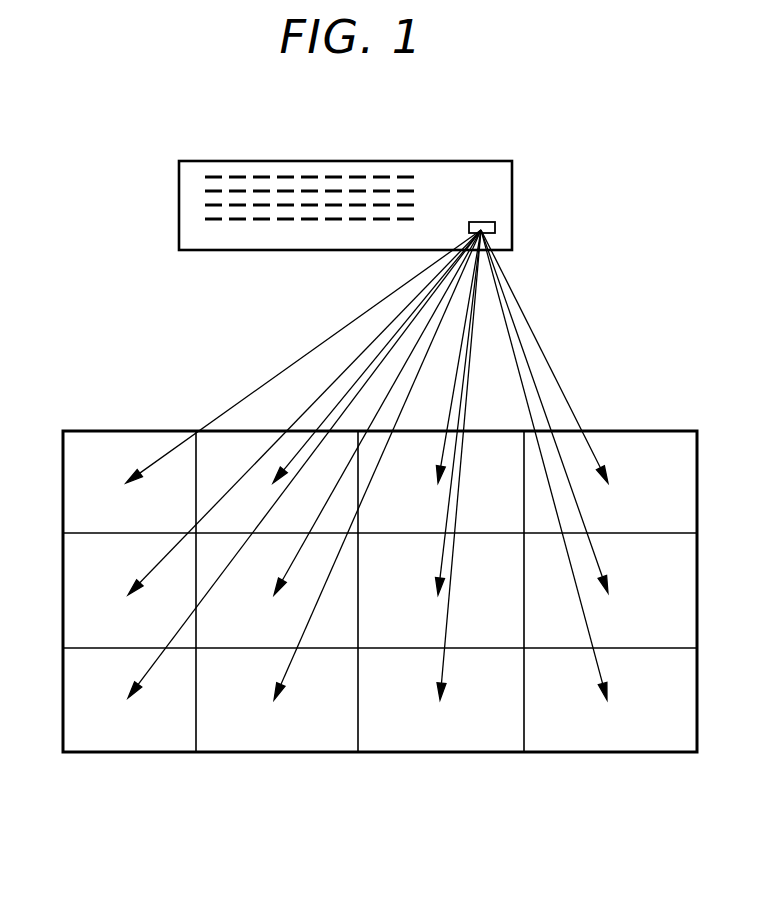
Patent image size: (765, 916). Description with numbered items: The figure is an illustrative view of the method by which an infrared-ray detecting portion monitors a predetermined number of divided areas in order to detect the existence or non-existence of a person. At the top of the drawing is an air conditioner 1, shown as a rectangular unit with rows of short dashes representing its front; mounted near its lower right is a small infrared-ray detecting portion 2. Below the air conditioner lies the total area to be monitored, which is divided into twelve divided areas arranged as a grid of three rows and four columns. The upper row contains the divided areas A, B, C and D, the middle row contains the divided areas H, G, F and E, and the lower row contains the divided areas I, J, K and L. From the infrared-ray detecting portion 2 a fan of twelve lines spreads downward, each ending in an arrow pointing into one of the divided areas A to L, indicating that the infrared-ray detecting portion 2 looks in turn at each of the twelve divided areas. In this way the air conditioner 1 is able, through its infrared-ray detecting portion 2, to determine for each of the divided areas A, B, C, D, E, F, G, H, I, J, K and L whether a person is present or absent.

The air conditioner 1 is at (179, 207).
The infrared-ray detecting portion 2 is at (485, 224).
The divided area A is at (298, 371).
The divided area B is at (368, 371).
The divided area C is at (455, 371).
The divided area D is at (551, 371).
The divided area E is at (550, 427).
The divided area F is at (456, 427).
The divided area G is at (368, 427).
The divided area H is at (298, 427).
The divided area I is at (300, 479).
The divided area J is at (372, 479).
The divided area K is at (456, 479).
The divided area L is at (550, 479).